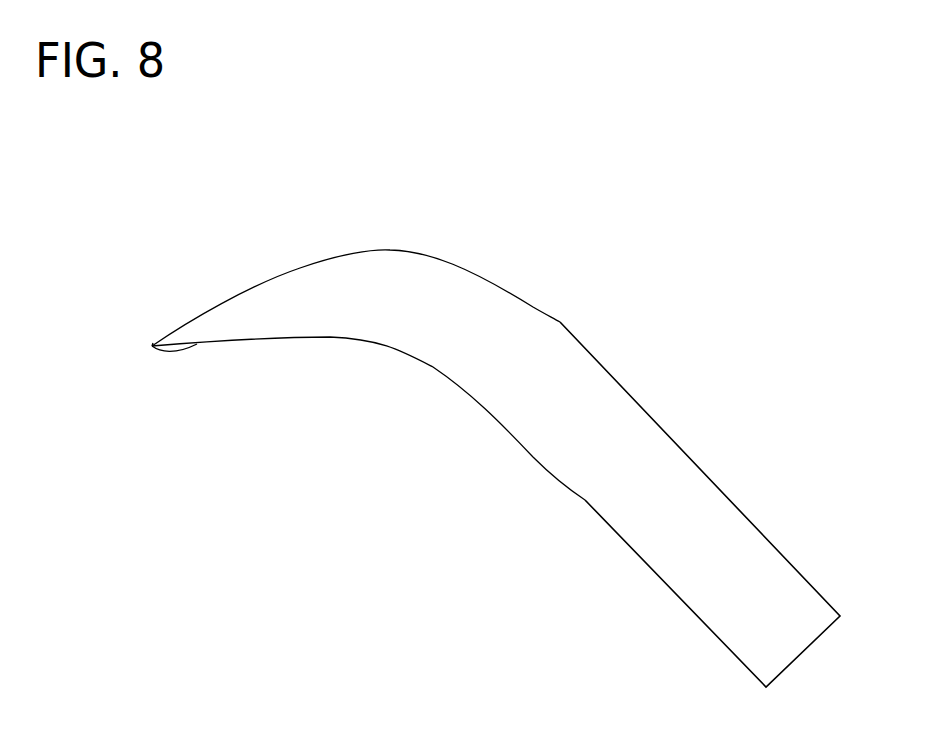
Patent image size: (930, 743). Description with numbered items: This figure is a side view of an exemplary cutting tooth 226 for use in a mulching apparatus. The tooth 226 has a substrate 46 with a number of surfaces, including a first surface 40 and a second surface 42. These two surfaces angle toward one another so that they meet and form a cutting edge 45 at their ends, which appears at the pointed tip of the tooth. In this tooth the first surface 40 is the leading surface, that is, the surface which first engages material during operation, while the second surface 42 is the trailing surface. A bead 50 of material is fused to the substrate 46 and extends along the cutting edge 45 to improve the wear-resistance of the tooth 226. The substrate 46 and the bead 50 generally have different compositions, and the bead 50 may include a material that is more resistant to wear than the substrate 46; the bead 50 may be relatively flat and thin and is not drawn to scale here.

The cutting tooth 226 is at (609, 359).
The substrate 46 is at (321, 349).
The second surface 42 is at (278, 277).
The first surface 40 is at (228, 343).
The cutting edge 45 is at (152, 346).
The bead 50 is at (177, 352).